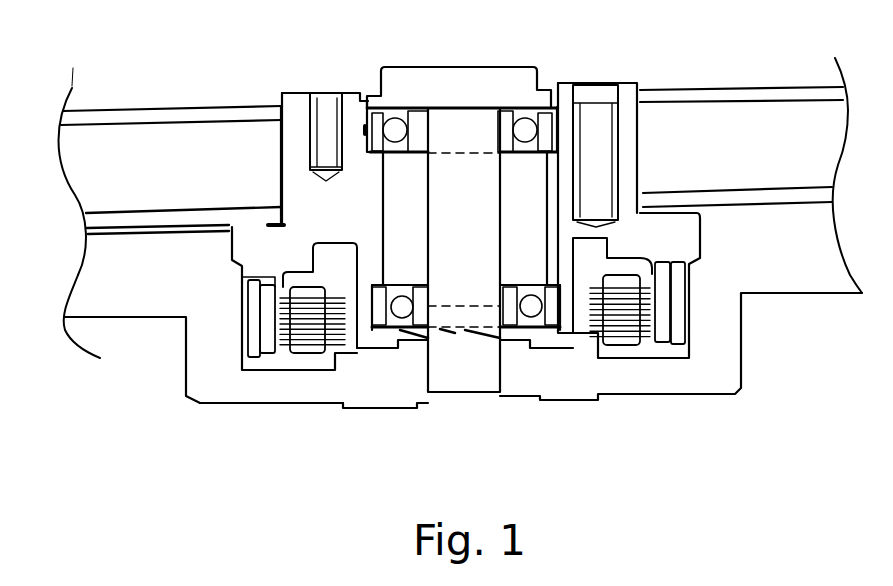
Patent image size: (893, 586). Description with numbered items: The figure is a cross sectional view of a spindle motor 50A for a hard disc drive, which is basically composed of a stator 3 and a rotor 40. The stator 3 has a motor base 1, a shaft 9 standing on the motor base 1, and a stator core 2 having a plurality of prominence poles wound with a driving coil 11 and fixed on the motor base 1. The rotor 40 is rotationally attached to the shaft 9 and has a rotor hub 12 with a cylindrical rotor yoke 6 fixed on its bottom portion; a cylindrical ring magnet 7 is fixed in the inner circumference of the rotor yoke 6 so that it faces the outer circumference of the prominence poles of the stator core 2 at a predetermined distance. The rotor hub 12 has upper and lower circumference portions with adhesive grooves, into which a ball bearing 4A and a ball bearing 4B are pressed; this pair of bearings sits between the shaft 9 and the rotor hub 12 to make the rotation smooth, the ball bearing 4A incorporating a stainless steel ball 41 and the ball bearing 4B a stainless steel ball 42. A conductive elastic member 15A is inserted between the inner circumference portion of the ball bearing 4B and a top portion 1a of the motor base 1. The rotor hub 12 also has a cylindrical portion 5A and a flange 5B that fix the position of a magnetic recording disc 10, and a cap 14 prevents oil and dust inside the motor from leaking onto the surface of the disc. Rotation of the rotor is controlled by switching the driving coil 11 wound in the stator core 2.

The motor base 1 is at (218, 375).
The top portion of the motor base 1a is at (532, 337).
The stator core 2 is at (288, 340).
The stator 3 is at (203, 339).
The ball bearing 4A is at (525, 140).
The ball bearing 4B is at (531, 285).
The cylindrical portion 5A is at (270, 137).
The flange 5B is at (247, 232).
The rotor yoke 6 is at (678, 333).
The ring magnet 7 is at (660, 343).
The shaft 9 is at (472, 378).
The magnetic recording disc 10 is at (83, 114).
The driving coil 11 is at (308, 352).
The rotor hub 12 is at (297, 108).
The cap 14 is at (473, 65).
The conductive elastic member 15A is at (463, 338).
The rotor 40 is at (148, 73).
The stainless steel ball 41 is at (397, 138).
The stainless steel ball 42 is at (401, 300).
The spindle motor 50A is at (710, 158).